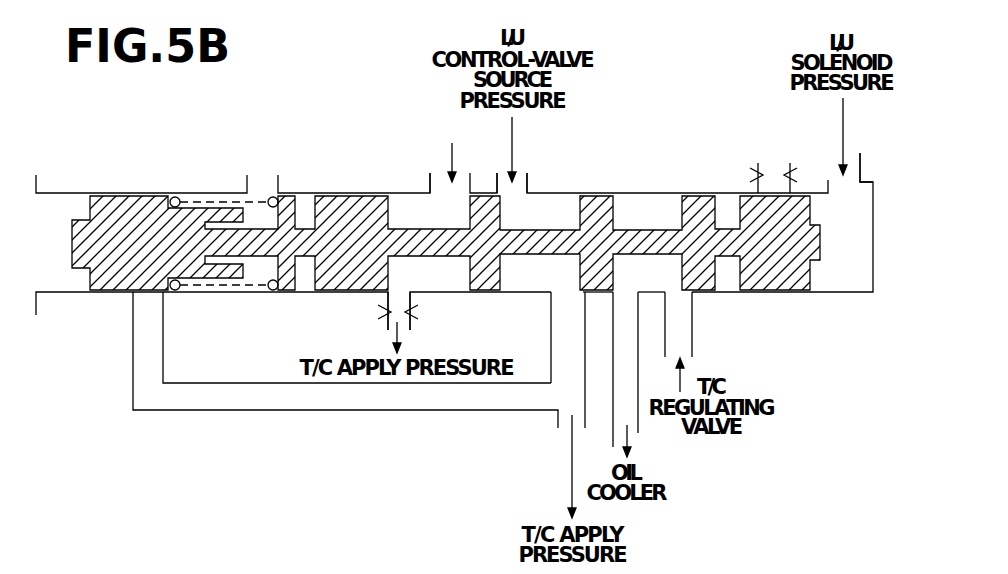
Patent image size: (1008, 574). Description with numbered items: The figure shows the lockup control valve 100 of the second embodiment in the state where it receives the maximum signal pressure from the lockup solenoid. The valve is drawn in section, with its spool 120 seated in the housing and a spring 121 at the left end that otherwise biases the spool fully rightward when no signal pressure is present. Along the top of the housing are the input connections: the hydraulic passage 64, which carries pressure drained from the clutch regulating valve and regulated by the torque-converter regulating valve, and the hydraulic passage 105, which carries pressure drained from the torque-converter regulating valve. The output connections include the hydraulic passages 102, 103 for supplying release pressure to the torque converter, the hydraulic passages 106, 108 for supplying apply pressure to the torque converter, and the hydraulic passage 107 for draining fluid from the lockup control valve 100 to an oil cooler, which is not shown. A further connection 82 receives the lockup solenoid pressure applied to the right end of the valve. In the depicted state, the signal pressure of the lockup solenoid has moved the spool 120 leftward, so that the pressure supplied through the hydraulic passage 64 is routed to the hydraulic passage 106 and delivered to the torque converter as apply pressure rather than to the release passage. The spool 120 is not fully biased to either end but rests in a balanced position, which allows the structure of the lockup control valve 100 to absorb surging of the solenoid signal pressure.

The lockup control valve 100 is at (305, 142).
The spring 121 is at (227, 193).
The hydraulic passage 102 is at (428, 190).
The hydraulic passage 64 is at (528, 190).
The spool 120 is at (590, 212).
The hydraulic passage 103 is at (758, 163).
The L/U solenoid pressure port 82 is at (860, 155).
The hydraulic passage 106 is at (387, 293).
The hydraulic passage 108 is at (268, 383).
The hydraulic passage 105 is at (693, 325).
The hydraulic passage 107 is at (638, 433).